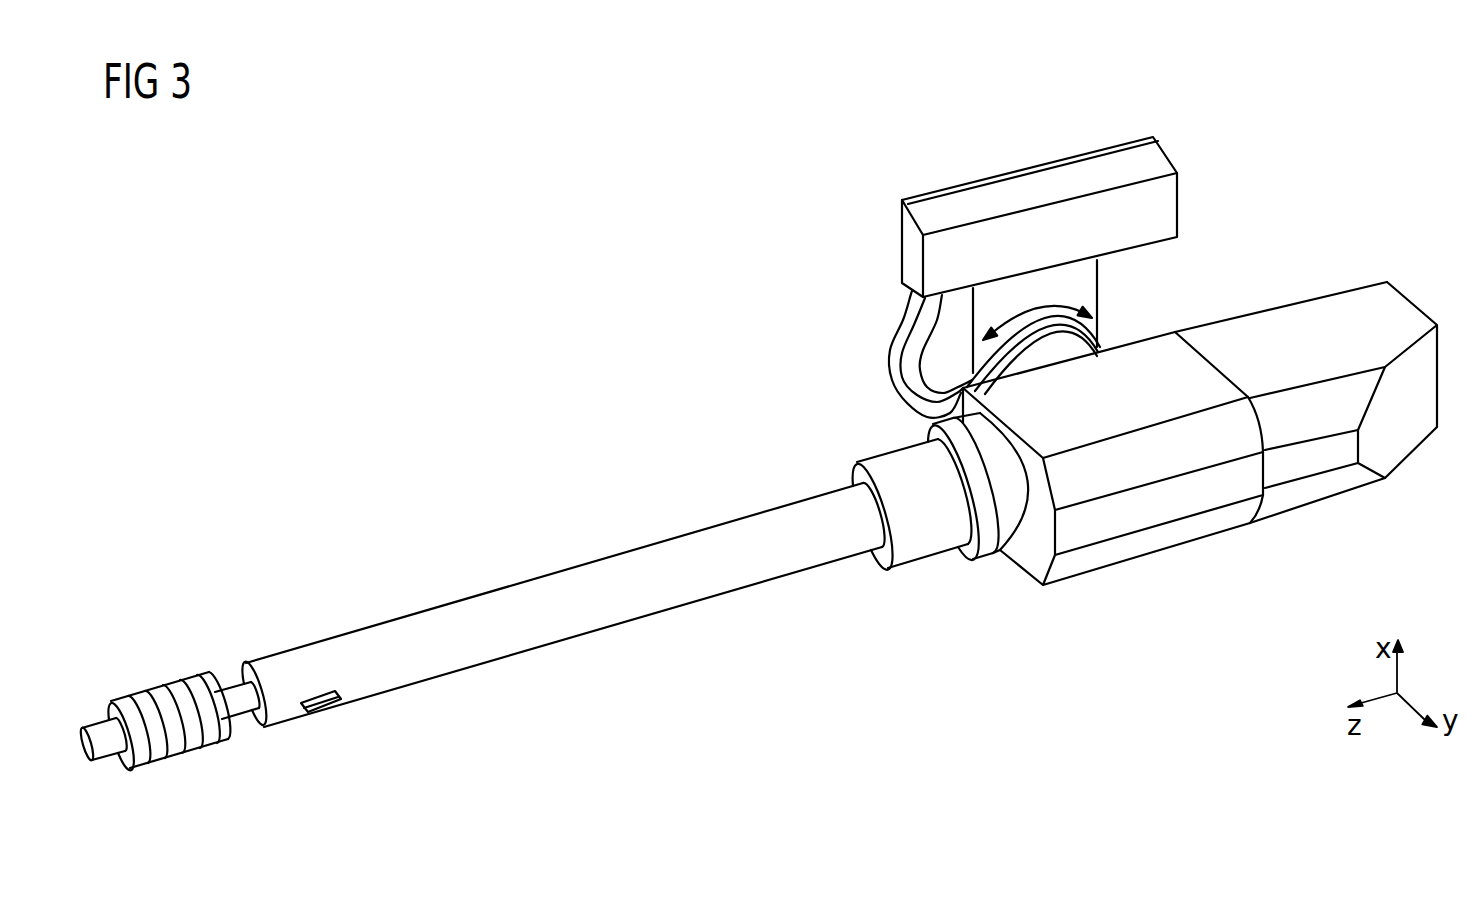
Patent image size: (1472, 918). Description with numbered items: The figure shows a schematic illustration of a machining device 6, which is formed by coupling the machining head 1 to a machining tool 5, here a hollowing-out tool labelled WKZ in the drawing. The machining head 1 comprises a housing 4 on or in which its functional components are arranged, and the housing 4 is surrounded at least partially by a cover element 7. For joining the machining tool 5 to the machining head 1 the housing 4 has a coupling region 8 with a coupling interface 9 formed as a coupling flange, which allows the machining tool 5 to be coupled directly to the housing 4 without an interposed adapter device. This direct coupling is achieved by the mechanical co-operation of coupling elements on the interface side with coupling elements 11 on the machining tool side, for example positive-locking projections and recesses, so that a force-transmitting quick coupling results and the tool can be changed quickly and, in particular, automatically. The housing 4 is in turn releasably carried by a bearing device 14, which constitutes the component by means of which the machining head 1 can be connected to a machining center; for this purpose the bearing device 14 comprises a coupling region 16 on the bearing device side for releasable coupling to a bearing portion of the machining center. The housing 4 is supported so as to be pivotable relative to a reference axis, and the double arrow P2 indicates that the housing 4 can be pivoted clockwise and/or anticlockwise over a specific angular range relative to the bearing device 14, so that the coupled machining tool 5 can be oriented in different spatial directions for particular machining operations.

The machining head 1 is at (1265, 202).
The housing 4 is at (1140, 600).
The machining tool 5 is at (455, 580).
The machining device 6 is at (516, 507).
The cover element 7 is at (1203, 527).
The coupling region 8 is at (997, 543).
The coupling interface 9 is at (990, 483).
The coupling elements on the machining tool side 11 is at (885, 465).
The bearing device 14 is at (910, 158).
The coupling region on the bearing device side 16 is at (1090, 173).
The double arrow P2 is at (1062, 299).
The tool WKZ is at (627, 570).